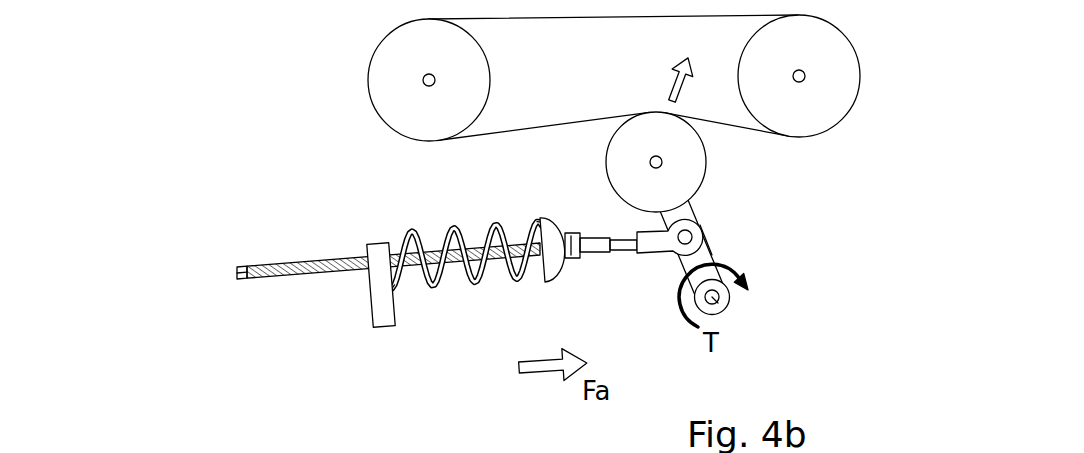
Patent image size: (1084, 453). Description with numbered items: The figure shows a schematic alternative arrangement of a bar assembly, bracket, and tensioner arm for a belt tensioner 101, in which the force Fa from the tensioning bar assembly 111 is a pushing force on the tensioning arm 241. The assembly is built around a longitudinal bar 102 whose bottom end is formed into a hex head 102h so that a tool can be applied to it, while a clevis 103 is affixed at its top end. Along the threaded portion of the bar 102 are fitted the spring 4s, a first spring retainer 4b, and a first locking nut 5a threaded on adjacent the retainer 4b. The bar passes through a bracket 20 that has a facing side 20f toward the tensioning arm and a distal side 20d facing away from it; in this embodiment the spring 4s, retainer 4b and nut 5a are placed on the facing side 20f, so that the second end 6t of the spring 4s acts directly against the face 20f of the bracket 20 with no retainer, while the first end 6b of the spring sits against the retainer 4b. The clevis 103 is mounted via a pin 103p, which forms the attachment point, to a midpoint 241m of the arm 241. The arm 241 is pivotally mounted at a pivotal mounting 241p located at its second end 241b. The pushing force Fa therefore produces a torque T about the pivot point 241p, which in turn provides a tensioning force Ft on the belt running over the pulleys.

The belt drive with tensioning device 101 is at (345, 160).
The tensioning bar assembly 111 is at (296, 196).
The longitudinal bar 102 is at (293, 260).
The hex head 102h is at (240, 279).
The bracket 20 is at (383, 307).
The distal side 20d is at (370, 307).
The facing side 20f is at (397, 312).
The spring 4s is at (418, 242).
The second end of spring 6t is at (397, 247).
The first spring retainer 4b is at (537, 275).
The first end of spring 6b is at (527, 224).
The first locking nut 5a is at (580, 260).
The clevis assembly 103 is at (660, 252).
The pin 103p is at (690, 238).
The tensioning arm 241 is at (682, 208).
The midpoint of arm 241m is at (714, 228).
The pivotal mounting 241p is at (716, 298).
The second end of arm 241b is at (725, 303).